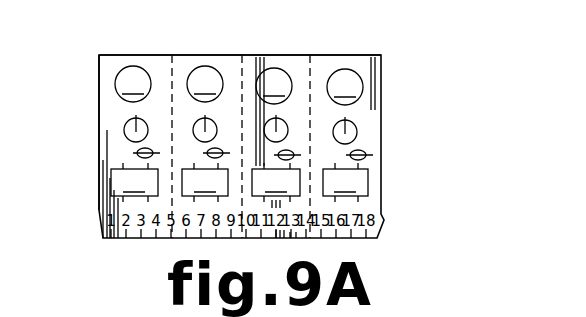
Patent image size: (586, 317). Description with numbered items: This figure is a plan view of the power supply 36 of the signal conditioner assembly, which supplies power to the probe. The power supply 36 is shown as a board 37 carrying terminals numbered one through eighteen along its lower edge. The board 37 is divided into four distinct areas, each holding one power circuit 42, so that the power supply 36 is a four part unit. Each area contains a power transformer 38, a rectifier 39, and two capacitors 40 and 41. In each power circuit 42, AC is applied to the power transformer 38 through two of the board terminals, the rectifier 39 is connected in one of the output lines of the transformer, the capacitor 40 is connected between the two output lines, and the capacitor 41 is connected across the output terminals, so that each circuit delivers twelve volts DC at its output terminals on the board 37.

The power supply 36 is at (132, 48).
The board 37 is at (99, 118).
The power transformer 38 is at (239, 182).
The rectifier 39 is at (239, 85).
The capacitor 40 is at (126, 127).
The capacitor 41 is at (138, 153).
The power circuit 42 is at (103, 70).